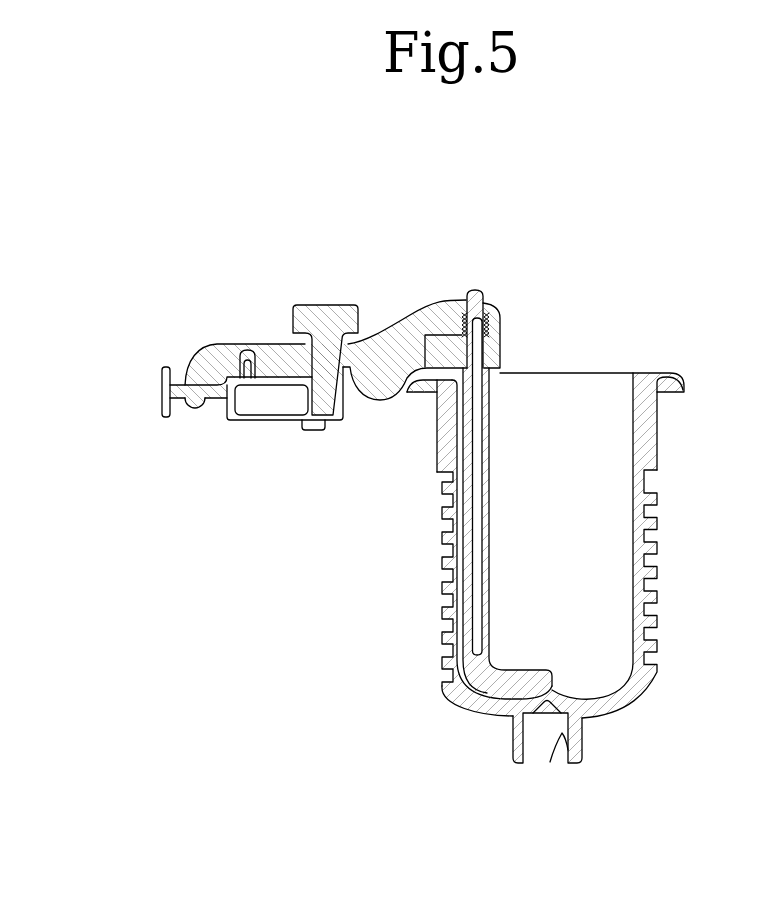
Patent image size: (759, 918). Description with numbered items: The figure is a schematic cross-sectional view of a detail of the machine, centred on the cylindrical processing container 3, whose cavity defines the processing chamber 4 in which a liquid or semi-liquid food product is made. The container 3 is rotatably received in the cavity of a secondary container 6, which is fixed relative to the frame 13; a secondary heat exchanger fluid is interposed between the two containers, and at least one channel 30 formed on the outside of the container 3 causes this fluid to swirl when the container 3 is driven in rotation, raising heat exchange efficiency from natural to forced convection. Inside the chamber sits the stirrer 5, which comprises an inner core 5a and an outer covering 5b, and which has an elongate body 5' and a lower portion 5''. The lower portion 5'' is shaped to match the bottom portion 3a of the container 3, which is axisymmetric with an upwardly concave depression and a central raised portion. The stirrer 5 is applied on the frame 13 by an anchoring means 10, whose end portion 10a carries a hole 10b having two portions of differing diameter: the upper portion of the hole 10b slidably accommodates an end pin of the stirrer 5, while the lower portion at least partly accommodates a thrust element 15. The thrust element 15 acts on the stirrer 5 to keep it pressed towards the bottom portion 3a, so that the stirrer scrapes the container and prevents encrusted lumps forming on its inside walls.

The processing container 3 is at (593, 340).
The bottom portion of the container 3a is at (548, 690).
The processing chamber 4 is at (627, 373).
The stirrer 5 is at (439, 494).
The inner core 5a is at (482, 446).
The outer covering 5b is at (482, 474).
The elongate body 5' is at (407, 579).
The lower portion 5'' is at (465, 731).
The secondary container 6 is at (645, 422).
The anchoring means 10 is at (396, 355).
The end portion 10a is at (453, 323).
The hole 10b is at (455, 294).
The frame 13 is at (312, 400).
The thrust element 15 is at (497, 316).
The channel 30 is at (655, 505).